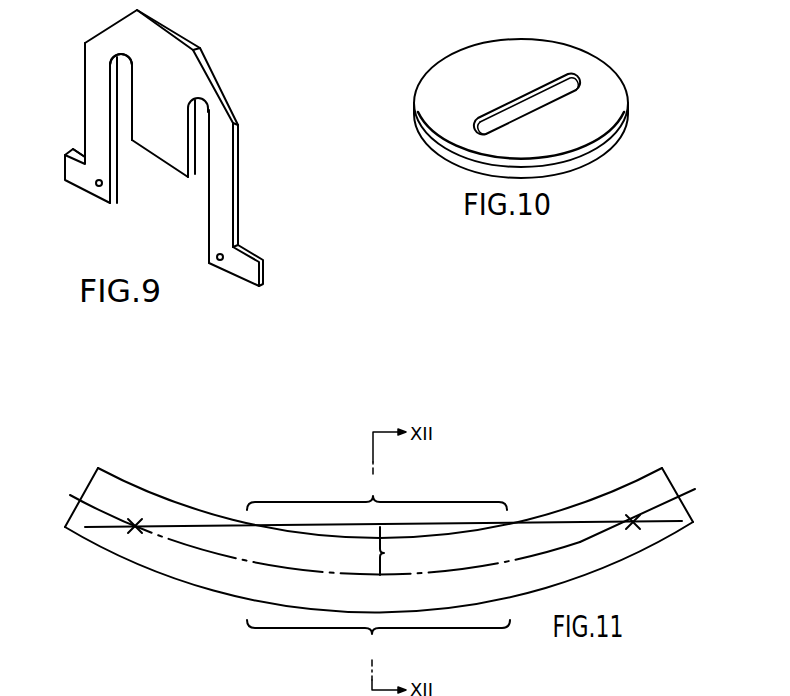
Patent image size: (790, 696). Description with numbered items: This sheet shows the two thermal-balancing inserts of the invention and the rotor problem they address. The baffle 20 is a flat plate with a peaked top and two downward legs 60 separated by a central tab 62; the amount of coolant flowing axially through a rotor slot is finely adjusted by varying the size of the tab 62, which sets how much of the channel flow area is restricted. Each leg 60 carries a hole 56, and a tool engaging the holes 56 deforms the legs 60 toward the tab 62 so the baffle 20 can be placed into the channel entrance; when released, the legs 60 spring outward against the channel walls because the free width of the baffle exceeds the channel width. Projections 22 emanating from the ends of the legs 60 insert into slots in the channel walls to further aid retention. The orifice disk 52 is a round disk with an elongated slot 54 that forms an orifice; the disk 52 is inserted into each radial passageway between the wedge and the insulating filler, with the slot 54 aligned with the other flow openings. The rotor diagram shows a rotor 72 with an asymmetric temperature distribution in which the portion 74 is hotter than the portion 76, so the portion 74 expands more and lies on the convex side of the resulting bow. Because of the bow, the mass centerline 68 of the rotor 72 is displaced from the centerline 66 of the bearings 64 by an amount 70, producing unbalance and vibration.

In FIG. 9, the baffle 20 is at (177, 32).
In FIG. 9, the legs 60 is at (85, 103).
In FIG. 9, the tab 62 is at (163, 164).
In FIG. 9, the projections 22 is at (65, 152).
In FIG. 9, the holes 56 is at (98, 187).
In FIG. 10, the disk 52 is at (628, 127).
In FIG. 10, the slot 54 is at (503, 105).
In FIG. 11, the rotor 72 is at (627, 482).
In FIG. 11, the mass centerline 68 is at (163, 572).
In FIG. 11, the centerline of the bearings 66 is at (673, 520).
In FIG. 11, the bearings 64 is at (132, 530).
In FIG. 11, the displacement amount 70 is at (396, 551).
In FIG. 11, the cooler portion of the rotor 76 is at (377, 491).
In FIG. 11, the hotter portion of the rotor 74 is at (378, 641).